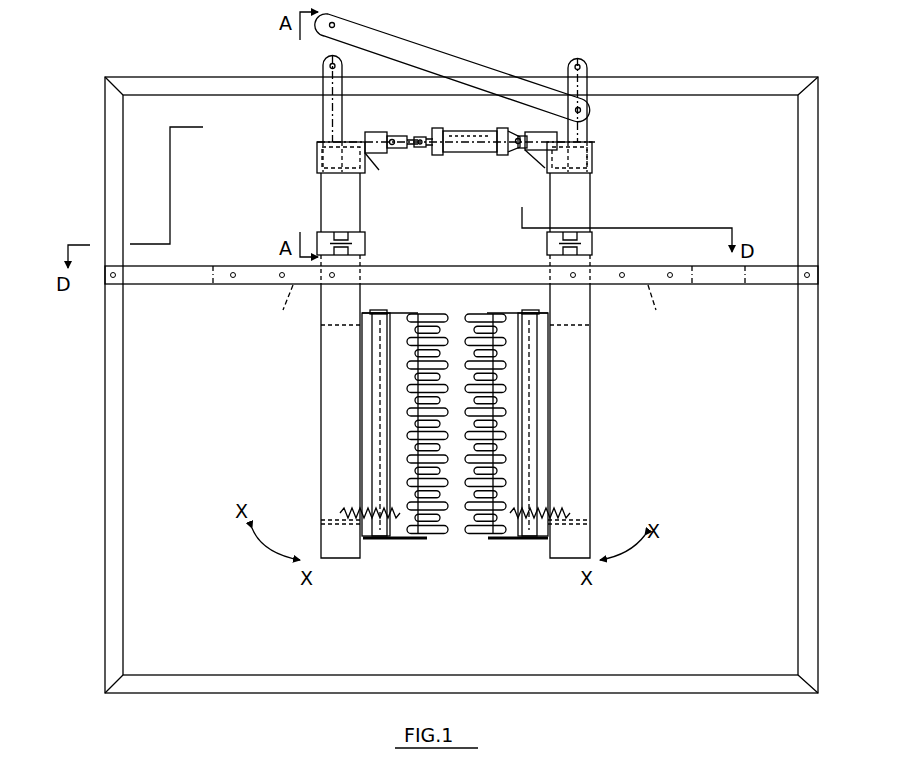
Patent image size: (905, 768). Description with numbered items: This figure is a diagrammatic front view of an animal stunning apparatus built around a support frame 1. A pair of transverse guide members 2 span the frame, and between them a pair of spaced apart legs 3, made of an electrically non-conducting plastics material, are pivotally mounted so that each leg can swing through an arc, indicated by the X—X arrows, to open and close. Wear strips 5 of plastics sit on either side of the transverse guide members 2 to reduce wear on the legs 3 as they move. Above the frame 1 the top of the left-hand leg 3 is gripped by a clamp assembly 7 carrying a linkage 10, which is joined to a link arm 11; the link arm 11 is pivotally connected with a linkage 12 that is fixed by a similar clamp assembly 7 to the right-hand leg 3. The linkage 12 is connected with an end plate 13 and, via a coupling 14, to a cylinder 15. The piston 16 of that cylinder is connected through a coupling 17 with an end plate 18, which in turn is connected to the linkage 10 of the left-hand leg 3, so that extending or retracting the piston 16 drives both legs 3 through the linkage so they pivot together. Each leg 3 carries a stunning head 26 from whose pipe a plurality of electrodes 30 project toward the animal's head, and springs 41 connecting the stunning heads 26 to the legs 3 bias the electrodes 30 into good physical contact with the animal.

The support frame 1 is at (751, 88).
The transverse guide members 2 is at (748, 285).
The legs 3 is at (330, 296).
The wear strips 5 is at (468, 308).
The clamp assembly 7 is at (583, 243).
The linkage 10 is at (323, 114).
The link arm 11 is at (432, 62).
The linkage 12 is at (586, 128).
The end plate 13 is at (522, 128).
The coupling 14 is at (522, 152).
The cylinder 15 is at (479, 146).
The piston 16 is at (421, 150).
The coupling 17 is at (392, 150).
The end plate 18 is at (364, 142).
The stunning head 26 is at (505, 548).
The electrodes 30 is at (428, 317).
The springs 41 is at (348, 512).